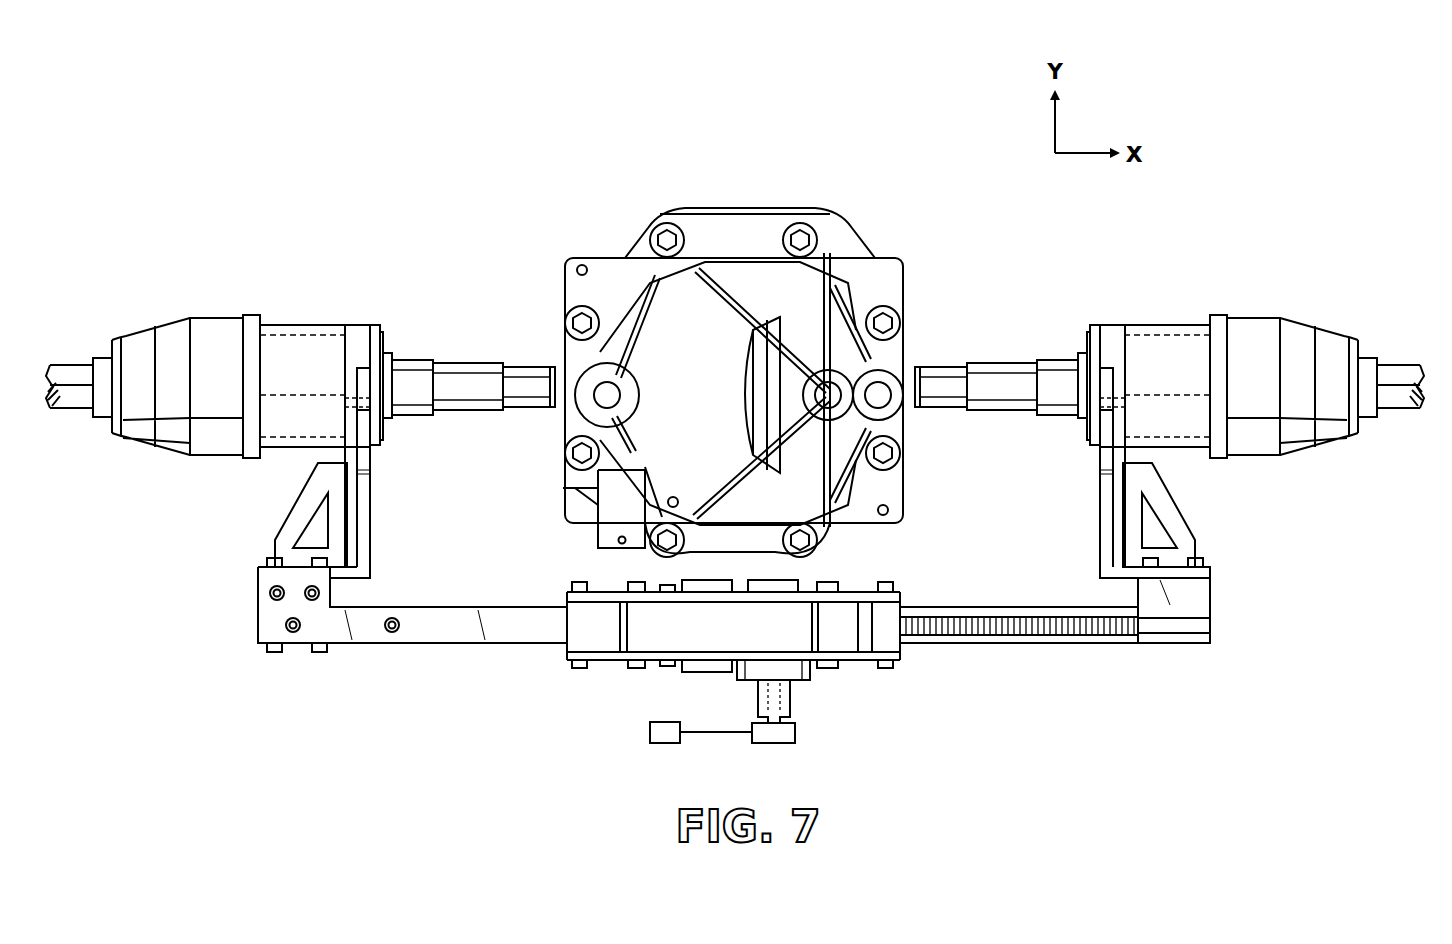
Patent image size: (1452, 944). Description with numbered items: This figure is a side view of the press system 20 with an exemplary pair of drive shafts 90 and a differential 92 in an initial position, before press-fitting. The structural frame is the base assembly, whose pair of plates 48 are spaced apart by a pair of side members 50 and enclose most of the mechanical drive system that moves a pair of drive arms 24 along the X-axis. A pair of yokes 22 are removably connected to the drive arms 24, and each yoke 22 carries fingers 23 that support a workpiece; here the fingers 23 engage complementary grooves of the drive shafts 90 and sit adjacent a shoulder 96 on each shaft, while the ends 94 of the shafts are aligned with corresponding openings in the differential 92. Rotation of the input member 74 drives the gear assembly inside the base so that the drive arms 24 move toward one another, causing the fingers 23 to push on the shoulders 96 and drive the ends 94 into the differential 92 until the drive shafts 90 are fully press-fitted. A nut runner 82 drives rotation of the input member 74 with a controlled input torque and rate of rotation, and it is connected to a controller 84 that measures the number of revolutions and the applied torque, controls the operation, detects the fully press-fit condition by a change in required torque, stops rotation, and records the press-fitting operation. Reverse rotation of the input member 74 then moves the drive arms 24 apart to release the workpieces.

The press system 20 is at (356, 694).
The yoke 22 is at (360, 515).
The finger 23 is at (362, 388).
The drive arm 24 is at (462, 662).
The plate 48 is at (860, 595).
The side member 50 is at (583, 622).
The input member 74 is at (758, 698).
The nut runner 82 is at (795, 733).
The controller 84 is at (650, 733).
The drive shaft 90 is at (215, 333).
The differential 92 is at (752, 258).
The end 94 is at (530, 372).
The shoulder 96 is at (352, 340).